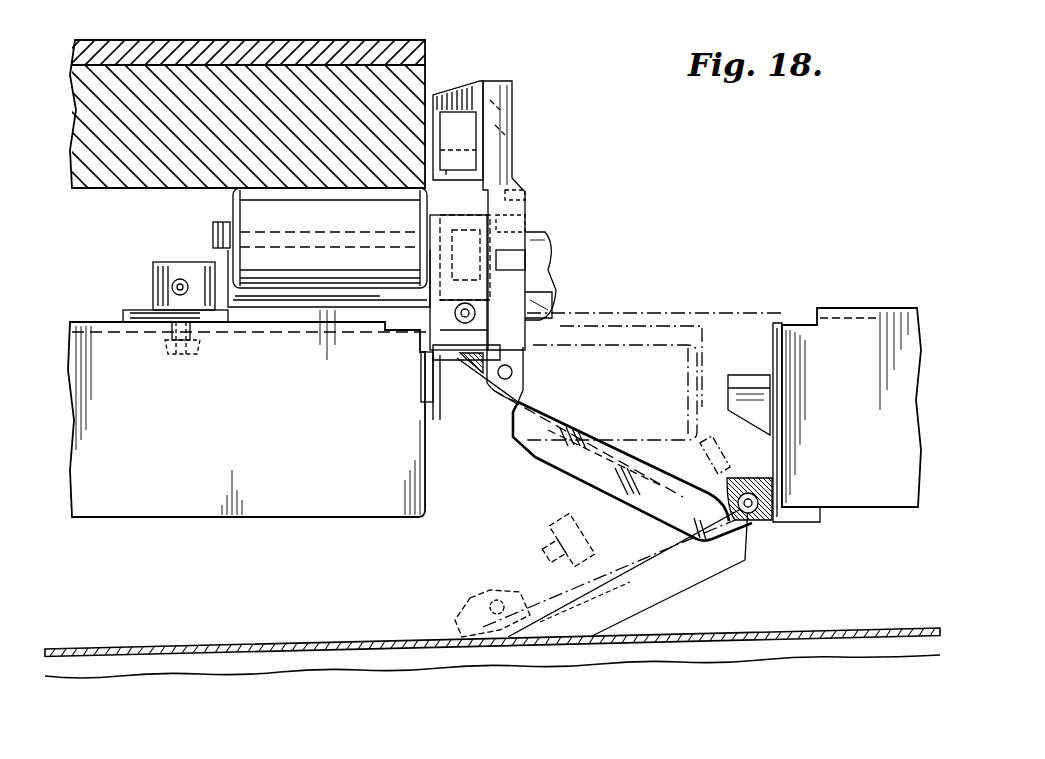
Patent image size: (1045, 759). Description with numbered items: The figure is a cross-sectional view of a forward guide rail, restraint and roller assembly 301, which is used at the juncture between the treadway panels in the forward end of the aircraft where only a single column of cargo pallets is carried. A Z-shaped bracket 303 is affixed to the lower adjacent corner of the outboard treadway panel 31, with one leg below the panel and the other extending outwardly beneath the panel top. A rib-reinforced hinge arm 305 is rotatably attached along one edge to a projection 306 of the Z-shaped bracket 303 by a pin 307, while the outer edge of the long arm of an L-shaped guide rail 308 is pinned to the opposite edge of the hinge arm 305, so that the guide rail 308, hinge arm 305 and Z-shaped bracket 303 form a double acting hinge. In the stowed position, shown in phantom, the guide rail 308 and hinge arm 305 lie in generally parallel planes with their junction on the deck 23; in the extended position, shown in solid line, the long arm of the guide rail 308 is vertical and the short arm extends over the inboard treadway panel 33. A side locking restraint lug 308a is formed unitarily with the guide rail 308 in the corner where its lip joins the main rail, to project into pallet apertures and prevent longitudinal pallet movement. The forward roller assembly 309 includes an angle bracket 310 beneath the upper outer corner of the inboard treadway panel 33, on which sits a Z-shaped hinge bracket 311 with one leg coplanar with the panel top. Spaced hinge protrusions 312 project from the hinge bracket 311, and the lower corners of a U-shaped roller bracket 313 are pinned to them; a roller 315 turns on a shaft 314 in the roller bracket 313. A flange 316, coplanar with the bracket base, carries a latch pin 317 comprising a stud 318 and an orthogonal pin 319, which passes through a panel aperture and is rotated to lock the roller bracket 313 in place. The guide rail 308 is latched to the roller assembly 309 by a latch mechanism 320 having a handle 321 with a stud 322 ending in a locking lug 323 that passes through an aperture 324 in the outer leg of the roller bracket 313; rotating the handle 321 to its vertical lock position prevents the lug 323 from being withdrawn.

The floor 23 is at (270, 647).
The outboard treadway panel 31 is at (900, 490).
The inboard treadway panel 33 is at (388, 519).
The forward guide rail, restraint and roller assembly 301 is at (626, 267).
The Z-shaped bracket 303 is at (820, 508).
The hinge arm 305 is at (563, 462).
The projection 306 is at (747, 478).
The pin 307 is at (760, 526).
The L-shaped guide rail 308 is at (504, 144).
The side locking restraint lug 308a is at (461, 135).
The forward roller assembly 309 is at (318, 172).
The angle bracket 310 is at (427, 403).
The Z-shaped hinge bracket 311 is at (433, 333).
The hinge protrusion 312 is at (467, 350).
The U-shaped roller bracket 313 is at (299, 311).
The shaft 314 is at (210, 214).
The roller 315 is at (405, 204).
The flange 316 is at (125, 311).
The latch pin 317 is at (154, 344).
The stud 318 is at (193, 327).
The orthogonal pin 319 is at (196, 353).
The latch mechanism 320 is at (552, 236).
The handle 321 is at (553, 293).
The stud 322 is at (552, 259).
The locking lug 323 is at (533, 191).
The aperture 324 is at (517, 222).